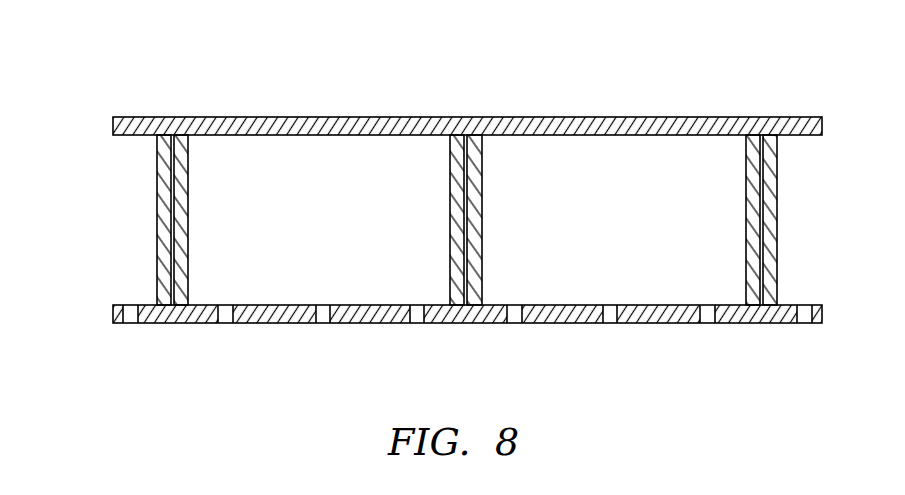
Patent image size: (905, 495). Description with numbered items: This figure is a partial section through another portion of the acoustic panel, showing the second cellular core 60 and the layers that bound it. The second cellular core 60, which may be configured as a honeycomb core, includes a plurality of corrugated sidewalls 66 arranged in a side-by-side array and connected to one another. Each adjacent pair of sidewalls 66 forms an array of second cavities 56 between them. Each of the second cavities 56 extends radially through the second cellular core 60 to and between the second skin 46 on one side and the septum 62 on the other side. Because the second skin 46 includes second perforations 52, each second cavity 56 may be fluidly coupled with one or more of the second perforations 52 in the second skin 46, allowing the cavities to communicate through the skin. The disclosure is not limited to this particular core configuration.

The second skin 46 is at (813, 323).
The second perforations 52 is at (325, 323).
The second cavities 56 is at (297, 194).
The second cellular core 60 is at (100, 133).
The septum 62 is at (795, 117).
The corrugated sidewalls 66 is at (157, 268).